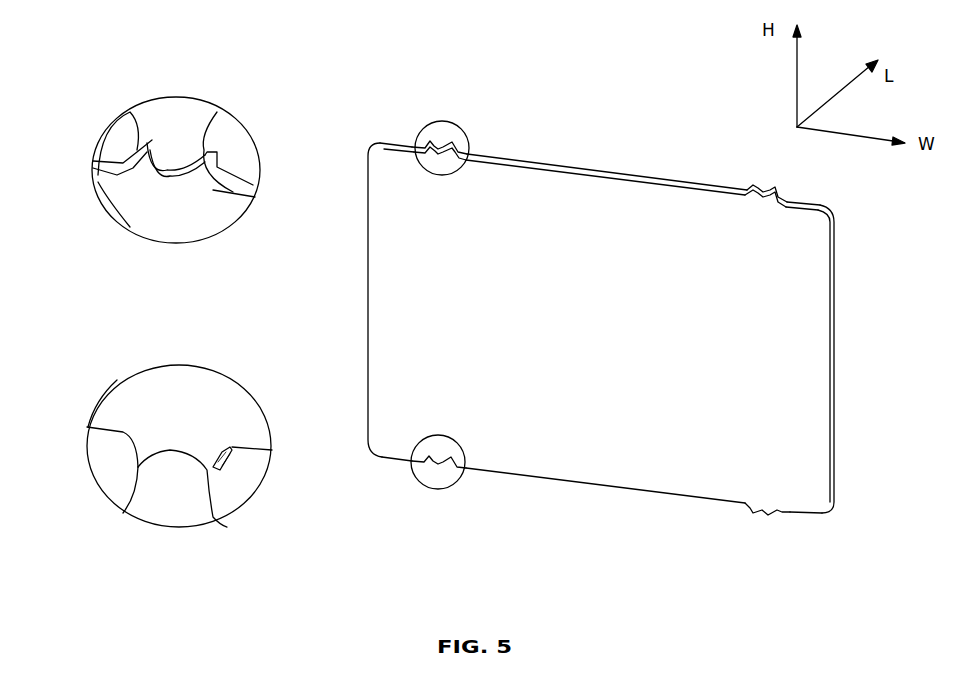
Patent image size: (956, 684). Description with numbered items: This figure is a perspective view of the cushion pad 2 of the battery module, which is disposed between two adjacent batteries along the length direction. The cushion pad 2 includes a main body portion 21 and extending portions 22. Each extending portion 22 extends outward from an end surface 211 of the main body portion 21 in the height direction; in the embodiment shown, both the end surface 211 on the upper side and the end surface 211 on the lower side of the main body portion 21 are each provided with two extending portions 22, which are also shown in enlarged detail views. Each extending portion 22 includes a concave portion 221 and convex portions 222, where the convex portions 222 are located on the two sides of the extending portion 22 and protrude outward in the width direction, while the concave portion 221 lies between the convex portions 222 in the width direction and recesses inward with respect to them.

The cushion pad 2 is at (458, 334).
The main body portion 21 is at (385, 305).
The end surface 211 is at (558, 166).
The extending portion 22 is at (438, 148).
The concave portion 221 is at (177, 157).
The convex portion 222 is at (135, 113).